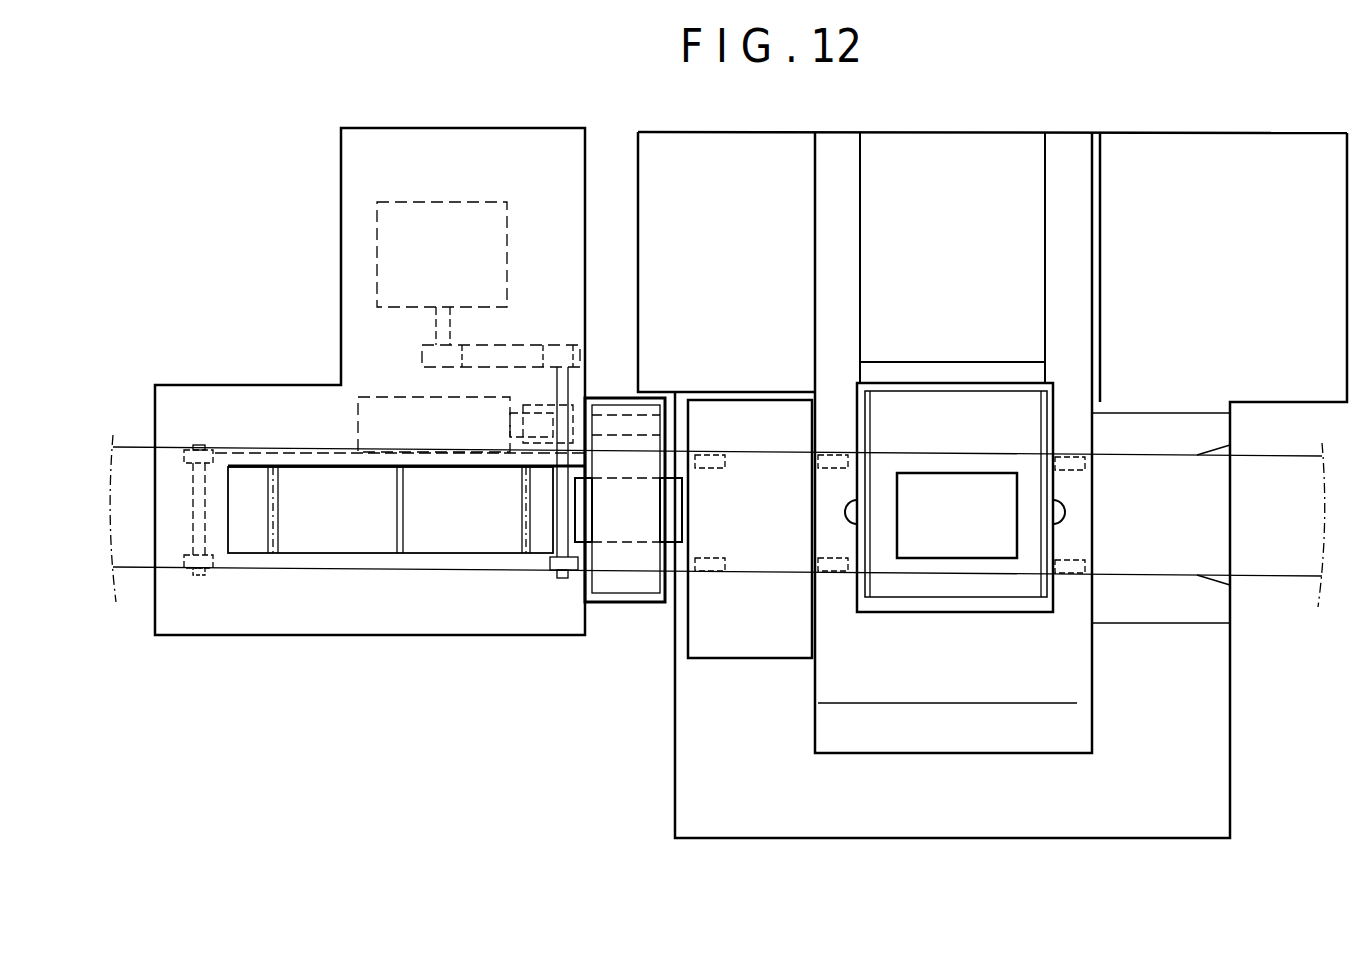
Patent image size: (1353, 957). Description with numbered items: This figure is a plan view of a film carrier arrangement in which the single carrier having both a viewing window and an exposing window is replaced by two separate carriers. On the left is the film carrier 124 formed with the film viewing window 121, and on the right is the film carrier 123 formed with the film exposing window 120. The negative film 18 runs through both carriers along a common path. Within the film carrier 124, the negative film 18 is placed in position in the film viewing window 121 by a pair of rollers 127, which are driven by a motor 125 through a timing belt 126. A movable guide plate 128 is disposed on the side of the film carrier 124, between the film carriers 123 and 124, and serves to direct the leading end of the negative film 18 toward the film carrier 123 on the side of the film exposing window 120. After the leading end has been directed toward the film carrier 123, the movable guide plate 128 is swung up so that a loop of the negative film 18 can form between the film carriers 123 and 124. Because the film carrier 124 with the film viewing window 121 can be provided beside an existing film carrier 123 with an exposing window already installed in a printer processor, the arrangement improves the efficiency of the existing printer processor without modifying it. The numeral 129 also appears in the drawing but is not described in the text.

The negative film 18 is at (131, 436).
The film exposing window 120 is at (942, 546).
The film viewing window 121 is at (322, 543).
The film carrier 123 is at (815, 845).
The film carrier 124 is at (236, 645).
The motor 125 is at (402, 200).
The timing belt 126 is at (498, 345).
The rollers 127 is at (196, 578).
The movable guide plate 128 is at (618, 542).
The guide 129 is at (382, 395).